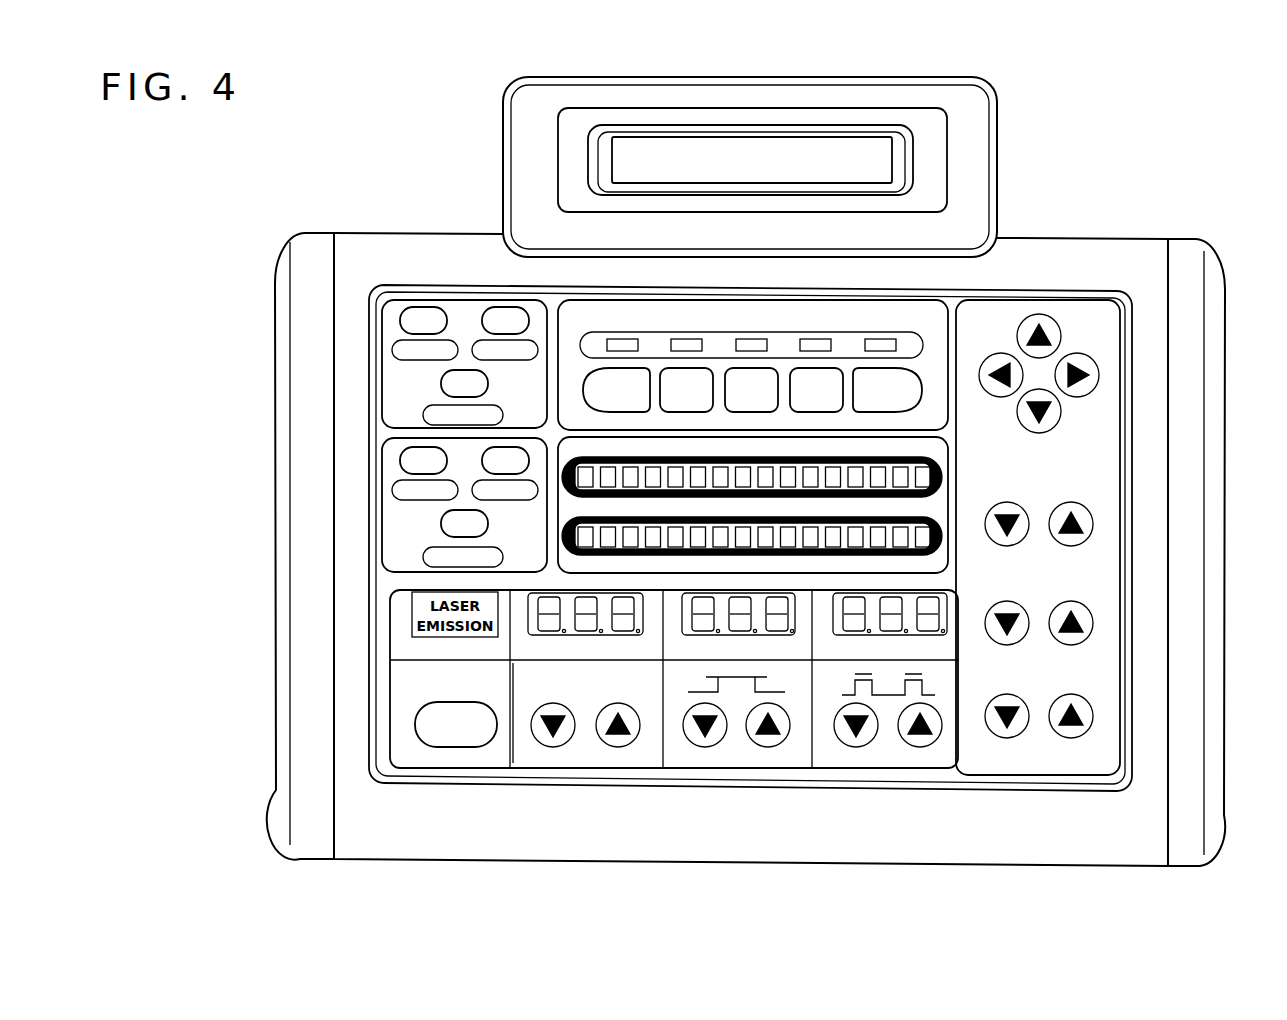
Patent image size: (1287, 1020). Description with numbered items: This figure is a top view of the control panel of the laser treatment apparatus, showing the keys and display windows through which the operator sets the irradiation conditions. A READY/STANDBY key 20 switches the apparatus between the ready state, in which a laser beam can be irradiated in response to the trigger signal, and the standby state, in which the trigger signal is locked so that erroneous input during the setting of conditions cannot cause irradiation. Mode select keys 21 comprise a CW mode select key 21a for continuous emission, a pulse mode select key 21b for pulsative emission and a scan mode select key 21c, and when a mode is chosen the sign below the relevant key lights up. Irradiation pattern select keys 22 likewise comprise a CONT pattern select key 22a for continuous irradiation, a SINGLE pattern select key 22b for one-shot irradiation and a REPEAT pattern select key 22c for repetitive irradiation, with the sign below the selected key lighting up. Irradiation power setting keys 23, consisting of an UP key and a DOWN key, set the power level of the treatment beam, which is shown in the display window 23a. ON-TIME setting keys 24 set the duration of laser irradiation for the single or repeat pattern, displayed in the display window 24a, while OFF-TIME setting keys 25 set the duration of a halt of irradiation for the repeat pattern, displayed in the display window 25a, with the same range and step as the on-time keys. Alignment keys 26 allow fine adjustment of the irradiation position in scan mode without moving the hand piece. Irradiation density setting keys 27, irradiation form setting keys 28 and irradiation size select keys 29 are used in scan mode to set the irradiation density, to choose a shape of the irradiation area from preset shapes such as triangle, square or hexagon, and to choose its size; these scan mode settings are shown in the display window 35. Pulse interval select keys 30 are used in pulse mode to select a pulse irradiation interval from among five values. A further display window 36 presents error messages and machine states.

The READY/STANDBY key 20 is at (433, 723).
The mode select keys 21 is at (367, 292).
The CW mode select key 21a is at (412, 315).
The pulse mode select key 21b is at (508, 313).
The scan mode select key 21c is at (458, 383).
The irradiation pattern select keys 22 is at (363, 494).
The CONT pattern select key 22a is at (413, 453).
The SINGLE pattern select key 22b is at (503, 467).
The REPEAT pattern select key 22c is at (462, 525).
The irradiation power setting keys 23 is at (578, 765).
The display window 23a is at (645, 648).
The ON-TIME setting keys 24 is at (730, 765).
The display window 24a is at (798, 648).
The OFF-TIME setting keys 25 is at (884, 765).
The display window 25a is at (958, 655).
The alignment keys 26 is at (1093, 413).
The irradiation density setting keys 27 is at (1093, 555).
The irradiation form setting keys 28 is at (1090, 662).
The irradiation size select keys 29 is at (1087, 761).
The pulse interval select keys 30 is at (925, 318).
The display window 35 is at (623, 152).
The display window 36 is at (932, 453).